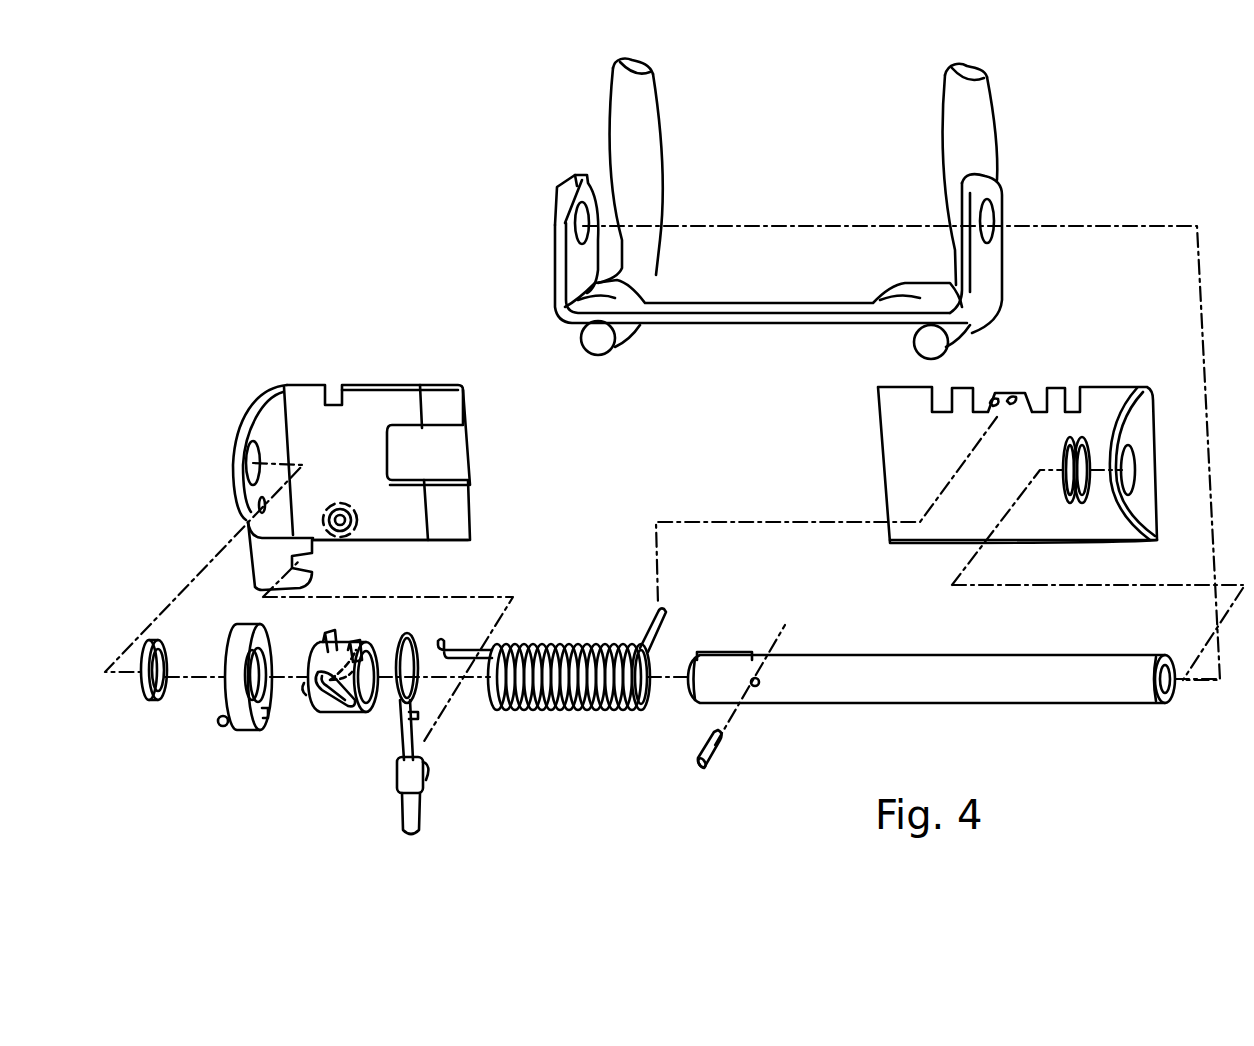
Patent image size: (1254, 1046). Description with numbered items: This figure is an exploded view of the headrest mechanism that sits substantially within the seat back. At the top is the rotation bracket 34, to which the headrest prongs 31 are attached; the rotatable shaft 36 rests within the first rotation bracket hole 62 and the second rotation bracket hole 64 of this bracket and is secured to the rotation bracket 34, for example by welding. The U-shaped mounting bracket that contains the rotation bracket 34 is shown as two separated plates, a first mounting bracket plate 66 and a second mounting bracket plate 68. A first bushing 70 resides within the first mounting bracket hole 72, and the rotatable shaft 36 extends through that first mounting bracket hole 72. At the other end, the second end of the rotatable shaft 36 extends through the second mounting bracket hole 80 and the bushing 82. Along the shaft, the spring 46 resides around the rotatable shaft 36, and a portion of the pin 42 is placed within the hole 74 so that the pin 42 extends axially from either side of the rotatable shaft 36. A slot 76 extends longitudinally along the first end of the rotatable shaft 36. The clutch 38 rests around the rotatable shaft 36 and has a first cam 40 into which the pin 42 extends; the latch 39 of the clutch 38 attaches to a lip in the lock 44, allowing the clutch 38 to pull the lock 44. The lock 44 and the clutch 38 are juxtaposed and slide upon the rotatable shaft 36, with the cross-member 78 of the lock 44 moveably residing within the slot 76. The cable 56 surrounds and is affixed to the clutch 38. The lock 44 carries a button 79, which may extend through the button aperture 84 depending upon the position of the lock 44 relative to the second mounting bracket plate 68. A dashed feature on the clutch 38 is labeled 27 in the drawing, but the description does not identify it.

The slot 27 is at (345, 665).
The headrest prongs 31 is at (638, 117).
The rotation bracket 34 is at (985, 270).
The rotatable shaft 36 is at (978, 698).
The clutch 38 is at (360, 710).
The latch 39 is at (312, 697).
The first cam 40 is at (343, 703).
The pin 42 is at (718, 758).
The lock 44 is at (243, 727).
The spring 46 is at (547, 712).
The cable 56 is at (410, 820).
The first rotation bracket hole 62 is at (990, 222).
The second rotation bracket hole 64 is at (586, 232).
The first mounting bracket plate 66 is at (1093, 387).
The second mounting bracket plate 68 is at (358, 385).
The first bushing 70 is at (1072, 500).
The first mounting bracket hole 72 is at (1133, 470).
The hole 74 is at (760, 680).
The slot 76 is at (727, 655).
The cross-member 78 is at (260, 680).
The button 79 is at (221, 722).
The second mounting bracket hole 80 is at (270, 425).
The bushing 82 is at (146, 702).
The button aperture 84 is at (258, 505).